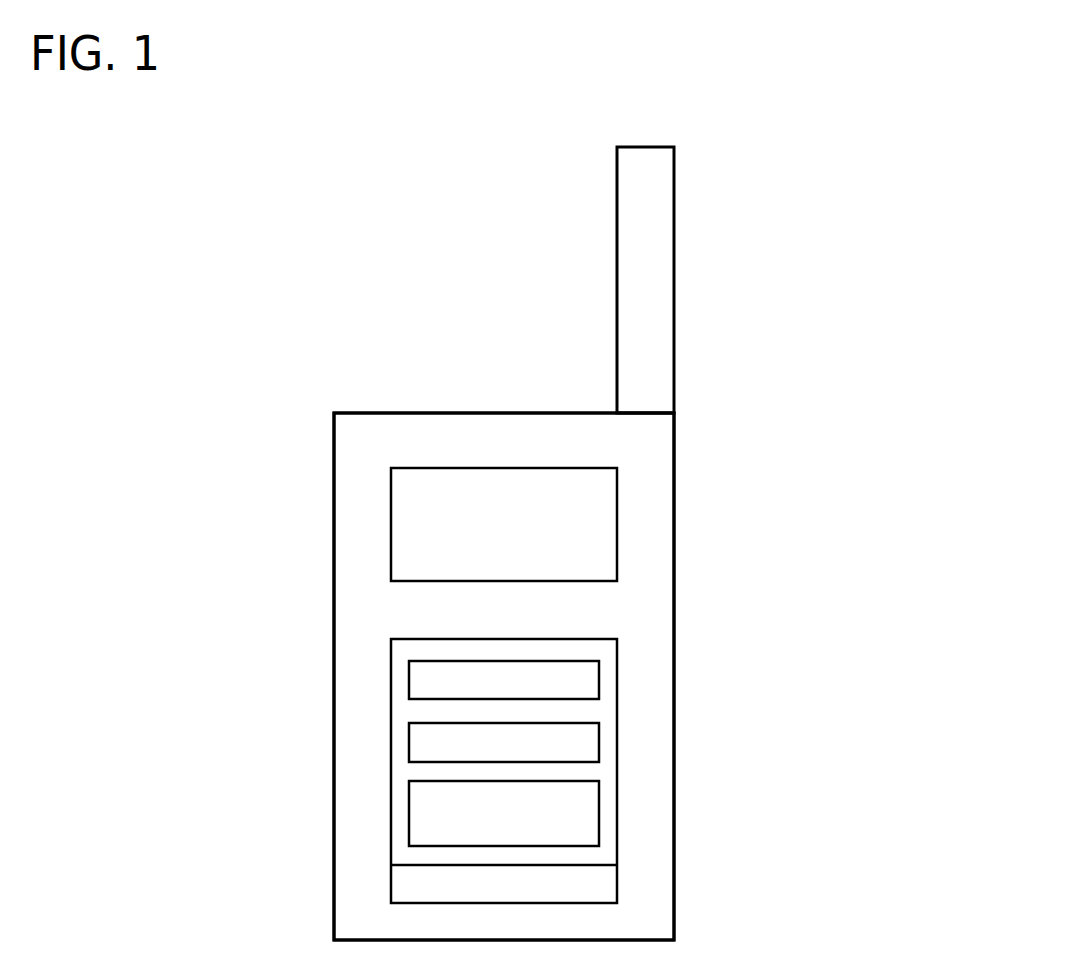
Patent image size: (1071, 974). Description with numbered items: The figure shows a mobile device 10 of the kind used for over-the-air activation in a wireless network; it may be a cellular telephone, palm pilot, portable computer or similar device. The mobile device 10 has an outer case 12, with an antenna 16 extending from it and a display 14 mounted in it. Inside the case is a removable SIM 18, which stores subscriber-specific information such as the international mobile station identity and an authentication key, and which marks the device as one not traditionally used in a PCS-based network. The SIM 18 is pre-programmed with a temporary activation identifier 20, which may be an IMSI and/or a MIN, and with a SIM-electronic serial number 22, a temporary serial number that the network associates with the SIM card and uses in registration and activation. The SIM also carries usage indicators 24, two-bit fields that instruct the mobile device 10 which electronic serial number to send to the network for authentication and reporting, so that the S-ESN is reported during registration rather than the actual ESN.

The mobile device 10 is at (840, 109).
The outer case 12 is at (675, 847).
The display 14 is at (617, 524).
The antenna 16 is at (674, 272).
The SIM 18 is at (617, 745).
The temporary activation identifier (TAI) 20 is at (409, 685).
The SIM-electronic serial number (S-ESN) 22 is at (409, 745).
The ANSI-136 Usage Indicators 24 is at (409, 813).